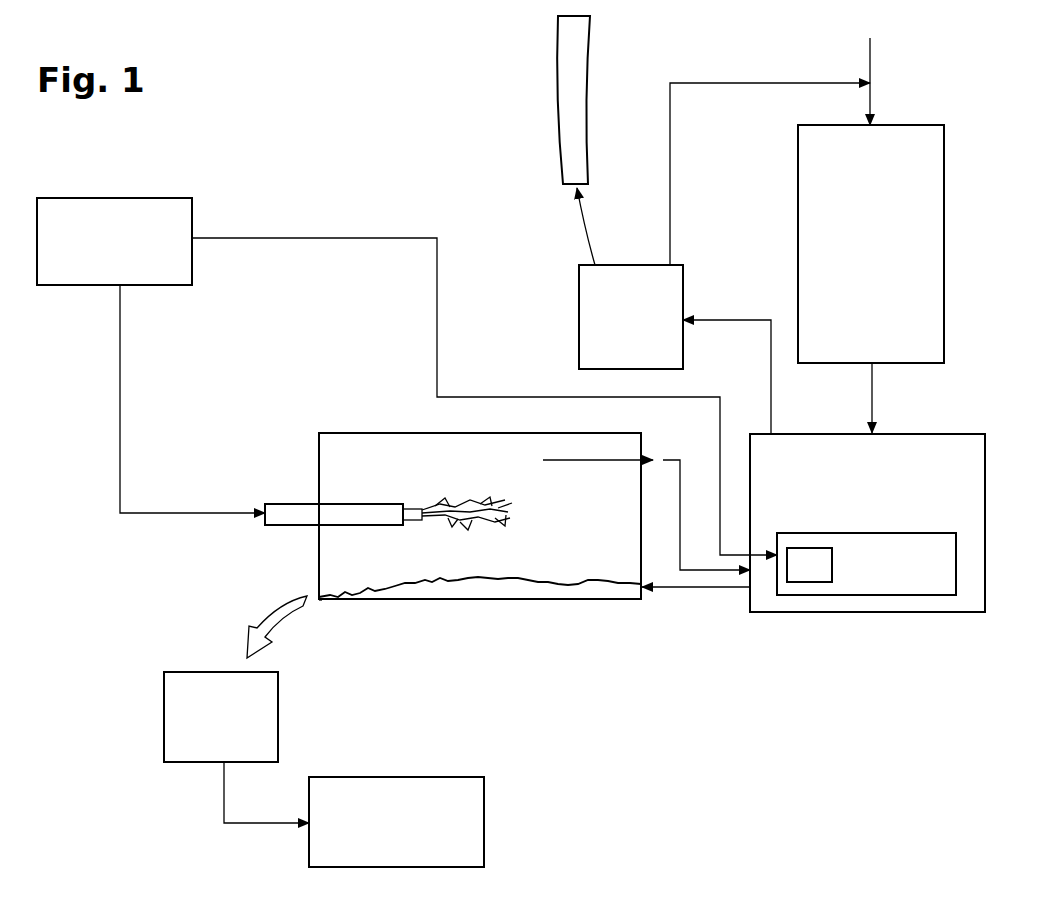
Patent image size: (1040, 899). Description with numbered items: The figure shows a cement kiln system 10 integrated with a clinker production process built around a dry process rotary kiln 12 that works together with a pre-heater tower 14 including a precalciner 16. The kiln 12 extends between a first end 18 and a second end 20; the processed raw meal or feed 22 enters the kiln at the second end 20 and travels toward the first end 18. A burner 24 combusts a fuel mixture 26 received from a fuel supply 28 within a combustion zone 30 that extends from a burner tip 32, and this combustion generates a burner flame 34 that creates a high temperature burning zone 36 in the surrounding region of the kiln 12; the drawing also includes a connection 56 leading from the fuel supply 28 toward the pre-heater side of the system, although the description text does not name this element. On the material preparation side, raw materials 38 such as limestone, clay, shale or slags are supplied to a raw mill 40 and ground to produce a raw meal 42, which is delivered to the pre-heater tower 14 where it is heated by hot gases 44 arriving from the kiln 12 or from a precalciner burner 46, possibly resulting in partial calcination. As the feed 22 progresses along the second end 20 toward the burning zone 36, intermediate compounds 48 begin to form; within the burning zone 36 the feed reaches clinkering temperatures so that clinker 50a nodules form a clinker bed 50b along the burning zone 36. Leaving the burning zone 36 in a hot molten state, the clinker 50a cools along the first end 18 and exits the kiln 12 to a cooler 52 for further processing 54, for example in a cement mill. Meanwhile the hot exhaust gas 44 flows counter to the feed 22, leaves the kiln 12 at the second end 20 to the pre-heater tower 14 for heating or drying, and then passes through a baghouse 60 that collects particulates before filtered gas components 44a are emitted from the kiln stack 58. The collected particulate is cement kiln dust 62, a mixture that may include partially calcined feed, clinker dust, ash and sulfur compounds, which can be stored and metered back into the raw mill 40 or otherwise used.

The cement kiln system 10 is at (266, 140).
The dry process rotary kiln 12 is at (350, 432).
The pre-heater tower 14 is at (943, 612).
The precalciner 16 is at (957, 571).
The first end 18 is at (333, 604).
The second end 20 is at (632, 591).
The feed 22 is at (681, 590).
The burner 24 is at (287, 503).
The fuel mixture 26 is at (121, 378).
The fuel supply 28 is at (114, 241).
The combustion zone 30 is at (441, 503).
The burner tip 32 is at (412, 507).
The burner flame 34 is at (498, 508).
The burning zone 36 is at (435, 568).
The raw materials 38 is at (872, 62).
The raw mill 40 is at (871, 244).
The raw meal 42 is at (873, 397).
The hot gases 44 is at (612, 459).
The filtered gas components 44a is at (585, 236).
The precalciner burner 46 is at (809, 565).
The intermediate compounds 48 is at (575, 585).
The clinker 50a is at (270, 613).
The clinker bed 50b is at (481, 577).
The cooler 52 is at (221, 717).
The further processing 54 is at (396, 822).
The control line 56 is at (438, 266).
The kiln stack 58 is at (562, 47).
The baghouse 60 is at (631, 317).
The cement kiln dust 62 is at (758, 82).